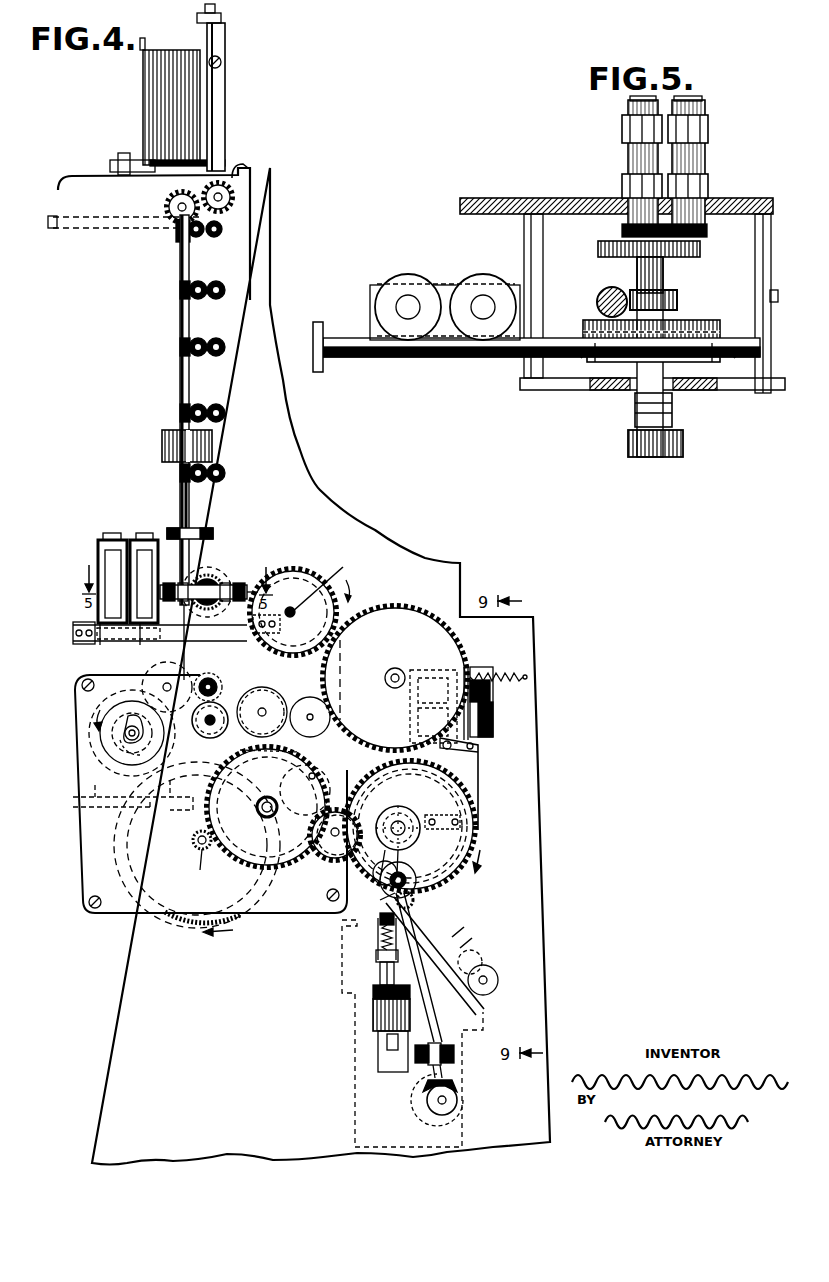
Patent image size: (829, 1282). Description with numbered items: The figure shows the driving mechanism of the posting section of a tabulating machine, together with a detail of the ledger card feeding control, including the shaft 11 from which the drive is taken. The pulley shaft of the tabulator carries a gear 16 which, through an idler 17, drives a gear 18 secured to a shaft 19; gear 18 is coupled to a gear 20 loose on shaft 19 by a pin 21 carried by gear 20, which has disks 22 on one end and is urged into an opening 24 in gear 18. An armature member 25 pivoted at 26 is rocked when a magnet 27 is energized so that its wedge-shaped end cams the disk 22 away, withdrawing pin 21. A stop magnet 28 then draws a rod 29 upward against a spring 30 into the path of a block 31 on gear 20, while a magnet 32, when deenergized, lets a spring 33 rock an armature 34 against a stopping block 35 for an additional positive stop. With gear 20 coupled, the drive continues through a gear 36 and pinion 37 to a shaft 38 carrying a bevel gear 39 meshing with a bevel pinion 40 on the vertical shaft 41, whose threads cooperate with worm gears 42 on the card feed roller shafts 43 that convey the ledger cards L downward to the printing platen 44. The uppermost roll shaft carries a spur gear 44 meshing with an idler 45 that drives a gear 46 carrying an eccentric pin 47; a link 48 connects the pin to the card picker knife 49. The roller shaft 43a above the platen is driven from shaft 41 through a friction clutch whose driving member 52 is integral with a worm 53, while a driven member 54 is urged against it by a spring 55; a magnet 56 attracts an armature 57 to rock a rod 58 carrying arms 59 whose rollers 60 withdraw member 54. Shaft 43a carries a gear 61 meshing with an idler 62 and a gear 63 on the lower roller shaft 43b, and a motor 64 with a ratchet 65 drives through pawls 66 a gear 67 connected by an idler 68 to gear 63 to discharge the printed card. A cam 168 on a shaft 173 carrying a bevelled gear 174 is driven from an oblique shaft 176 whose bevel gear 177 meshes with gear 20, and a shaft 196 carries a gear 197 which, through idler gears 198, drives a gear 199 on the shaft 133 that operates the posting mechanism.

In FIG. 4, the ledger cards L is at (165, 50).
In FIG. 4, the main drive shaft 11 is at (326, 590).
In FIG. 4, the gear 16 is at (307, 570).
In FIG. 4, the idler 17 is at (405, 617).
In FIG. 4, the gear 18 is at (462, 775).
In FIG. 4, the shaft 19 is at (403, 826).
In FIG. 4, the gear 20 is at (340, 862).
In FIG. 4, the pin 21 is at (408, 882).
In FIG. 4, the disks 22 is at (417, 877).
In FIG. 4, the opening 24 is at (380, 900).
In FIG. 4, the armature member 25 is at (437, 925).
In FIG. 4, the pivot 26 is at (467, 942).
In FIG. 4, the magnet 27 is at (497, 982).
In FIG. 4, the stop magnet 28 is at (390, 1013).
In FIG. 4, the rod 29 is at (390, 963).
In FIG. 4, the spring 30 is at (380, 937).
In FIG. 4, the block 31 is at (378, 869).
In FIG. 4, the magnet 32 is at (442, 672).
In FIG. 4, the spring 33 is at (508, 674).
In FIG. 4, the armature 34 is at (478, 790).
In FIG. 4, the stopping block 35 is at (483, 857).
In FIG. 4, the gear 36 is at (293, 868).
In FIG. 4, the pinion 37 is at (200, 868).
In FIG. 4, the shaft 38 is at (192, 840).
In FIG. 4, the bevel gear 39 is at (192, 925).
In FIG. 4, the bevel pinion 40 is at (185, 800).
In FIG. 4, the vertical shaft 41 is at (192, 516).
In FIG. 5, the vertical shaft 41 is at (597, 303).
In FIG. 4, the worm gears 42 is at (200, 283).
In FIG. 4, the card feed roller shafts 43 is at (183, 333).
In FIG. 4, the roller shaft 43a is at (225, 580).
In FIG. 5, the roller shaft 43a is at (637, 274).
In FIG. 4, the roller shaft 43b is at (270, 695).
In FIG. 4, the printing platen 44 is at (180, 250).
In FIG. 4, the idler 45 is at (164, 203).
In FIG. 4, the gear 46 is at (236, 199).
In FIG. 4, the eccentric pin 47 is at (243, 170).
In FIG. 4, the link 48 is at (217, 137).
In FIG. 4, the card picker knife 49 is at (218, 43).
In FIG. 5, the driving member 52 is at (718, 316).
In FIG. 4, the worm 53 is at (212, 578).
In FIG. 5, the worm 53 is at (673, 300).
In FIG. 4, the driven member 54 is at (233, 555).
In FIG. 5, the driven member 54 is at (680, 358).
In FIG. 5, the spring 55 is at (672, 420).
In FIG. 4, the magnet 56 is at (100, 560).
In FIG. 5, the magnet 56 is at (414, 275).
In FIG. 4, the armature 57 is at (105, 645).
In FIG. 5, the armature 57 is at (452, 290).
In FIG. 4, the rod 58 is at (150, 642).
In FIG. 5, the rod 58 is at (350, 358).
In FIG. 4, the arms 59 is at (173, 585).
In FIG. 5, the arms 59 is at (577, 352).
In FIG. 5, the rollers 60 is at (598, 362).
In FIG. 5, the gear 61 is at (700, 247).
In FIG. 4, the idler 62 is at (218, 680).
In FIG. 4, the gear 63 is at (222, 692).
In FIG. 4, the motor 64 is at (85, 736).
In FIG. 4, the ratchet 65 is at (118, 740).
In FIG. 4, the pawls 66 is at (110, 752).
In FIG. 4, the gear 67 is at (110, 720).
In FIG. 4, the idler 68 is at (140, 648).
In FIG. 4, the shaft 133 is at (372, 820).
In FIG. 4, the cam 168 is at (463, 1127).
In FIG. 4, the shaft 173 is at (452, 1100).
In FIG. 4, the bevelled gear 174 is at (455, 1088).
In FIG. 4, the oblique shaft 176 is at (436, 1030).
In FIG. 4, the bevel gear 177 is at (420, 845).
In FIG. 4, the shaft 196 is at (216, 722).
In FIG. 4, the gear 197 is at (270, 758).
In FIG. 4, the idler gears 198 is at (305, 790).
In FIG. 4, the gear 199 is at (300, 830).